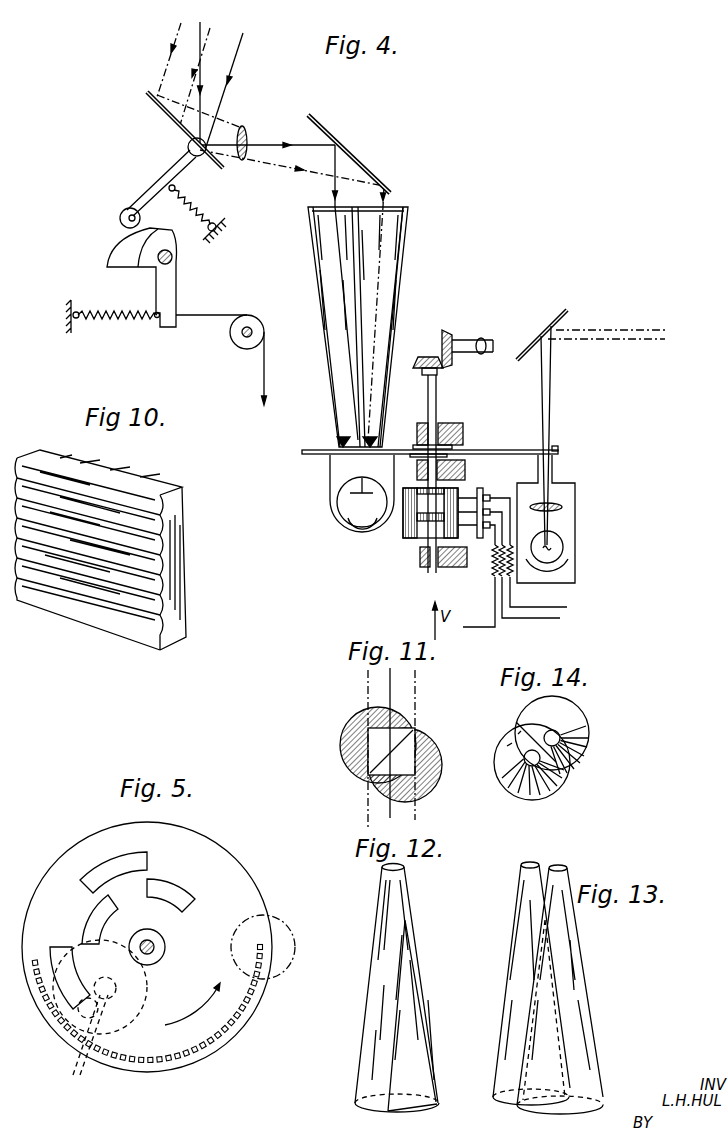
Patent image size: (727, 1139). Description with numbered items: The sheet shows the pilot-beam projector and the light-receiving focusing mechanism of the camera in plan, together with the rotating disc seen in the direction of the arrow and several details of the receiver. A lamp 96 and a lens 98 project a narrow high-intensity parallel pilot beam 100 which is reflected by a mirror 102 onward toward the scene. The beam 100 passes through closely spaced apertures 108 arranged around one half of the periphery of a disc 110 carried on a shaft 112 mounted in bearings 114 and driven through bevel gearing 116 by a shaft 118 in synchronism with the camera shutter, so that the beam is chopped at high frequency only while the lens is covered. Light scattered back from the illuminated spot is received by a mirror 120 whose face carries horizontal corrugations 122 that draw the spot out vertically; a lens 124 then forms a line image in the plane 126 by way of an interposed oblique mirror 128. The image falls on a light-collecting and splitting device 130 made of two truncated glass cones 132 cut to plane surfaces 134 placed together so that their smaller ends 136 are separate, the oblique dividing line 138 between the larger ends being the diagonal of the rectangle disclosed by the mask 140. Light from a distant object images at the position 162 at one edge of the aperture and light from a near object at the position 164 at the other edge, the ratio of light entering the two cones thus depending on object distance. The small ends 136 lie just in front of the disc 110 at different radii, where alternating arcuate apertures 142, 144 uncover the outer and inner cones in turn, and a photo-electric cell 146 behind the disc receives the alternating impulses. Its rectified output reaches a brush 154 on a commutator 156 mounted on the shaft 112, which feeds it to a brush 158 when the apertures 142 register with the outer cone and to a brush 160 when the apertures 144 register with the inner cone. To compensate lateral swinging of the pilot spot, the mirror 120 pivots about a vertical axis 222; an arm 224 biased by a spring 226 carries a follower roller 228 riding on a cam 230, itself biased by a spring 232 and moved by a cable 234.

In FIG. 4, the lamp 96 is at (557, 550).
In FIG. 4, the lens 98 is at (557, 507).
In FIG. 4, the pilot beam 100 is at (548, 400).
In FIG. 4, the mirror 102 is at (552, 322).
In FIG. 5, the apertures 108 is at (227, 1030).
In FIG. 4, the disc 110 is at (504, 448).
In FIG. 5, the disc 110 is at (203, 852).
In FIG. 4, the shaft 112 is at (440, 398).
In FIG. 4, the bearings 114 is at (417, 472).
In FIG. 4, the bevel gearing 116 is at (427, 356).
In FIG. 4, the shaft 118 is at (467, 340).
In FIG. 4, the mirror 120 is at (145, 94).
In FIG. 10, the mirror 120 is at (100, 473).
In FIG. 10, the corrugations 122 is at (137, 592).
In FIG. 4, the lens 124 is at (247, 127).
In FIG. 4, the plane 126 is at (398, 202).
In FIG. 4, the oblique mirror 128 is at (353, 157).
In FIG. 4, the light-collecting and splitting device 130 is at (403, 255).
In FIG. 4, the truncated cones 132 is at (398, 300).
In FIG. 12, the truncated cones 132 is at (378, 1028).
In FIG. 13, the truncated cones 132 is at (568, 963).
In FIG. 12, the plane surfaces 134 is at (408, 1003).
In FIG. 13, the plane surfaces 134 is at (553, 1040).
In FIG. 4, the smaller ends 136 is at (370, 437).
In FIG. 14, the smaller ends 136 is at (560, 737).
In FIG. 5, the smaller ends 136 is at (100, 1019).
In FIG. 13, the smaller ends 136 is at (560, 864).
In FIG. 11, the dividing line 138 is at (390, 757).
In FIG. 14, the dividing line 138 is at (557, 763).
In FIG. 12, the dividing line 138 is at (430, 1112).
In FIG. 13, the dividing line 138 is at (535, 1088).
In FIG. 11, the mask 140 is at (417, 757).
In FIG. 4, the arcuate apertures 142 is at (337, 445).
In FIG. 5, the arcuate apertures 142 is at (105, 866).
In FIG. 4, the arcuate apertures 144 is at (370, 455).
In FIG. 5, the arcuate apertures 144 is at (168, 892).
In FIG. 4, the photo-electric cell 146 is at (347, 512).
In FIG. 4, the brush 154 is at (487, 496).
In FIG. 4, the commutator 156 is at (417, 508).
In FIG. 4, the brush 158 is at (460, 493).
In FIG. 4, the brush 160 is at (467, 523).
In FIG. 4, the image position 162 is at (332, 207).
In FIG. 11, the image position 162 is at (417, 812).
In FIG. 4, the image position 164 is at (410, 208).
In FIG. 11, the image position 164 is at (367, 812).
In FIG. 4, the vertical axis 222 is at (188, 145).
In FIG. 4, the arm 224 is at (177, 175).
In FIG. 4, the spring 226 is at (200, 222).
In FIG. 4, the follower roller 228 is at (122, 215).
In FIG. 4, the cam 230 is at (118, 260).
In FIG. 4, the spring 232 is at (117, 320).
In FIG. 4, the cable 234 is at (213, 315).